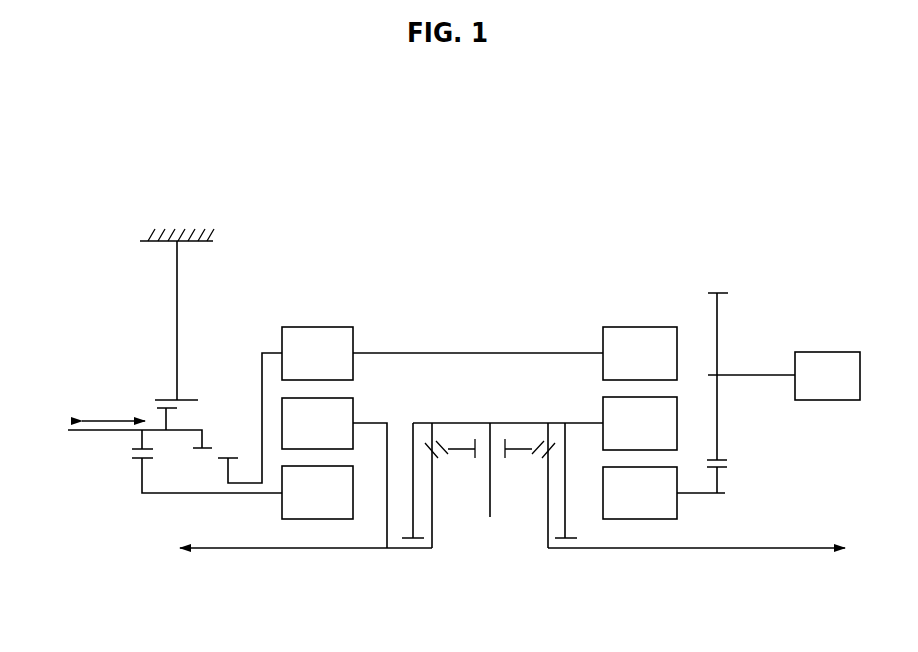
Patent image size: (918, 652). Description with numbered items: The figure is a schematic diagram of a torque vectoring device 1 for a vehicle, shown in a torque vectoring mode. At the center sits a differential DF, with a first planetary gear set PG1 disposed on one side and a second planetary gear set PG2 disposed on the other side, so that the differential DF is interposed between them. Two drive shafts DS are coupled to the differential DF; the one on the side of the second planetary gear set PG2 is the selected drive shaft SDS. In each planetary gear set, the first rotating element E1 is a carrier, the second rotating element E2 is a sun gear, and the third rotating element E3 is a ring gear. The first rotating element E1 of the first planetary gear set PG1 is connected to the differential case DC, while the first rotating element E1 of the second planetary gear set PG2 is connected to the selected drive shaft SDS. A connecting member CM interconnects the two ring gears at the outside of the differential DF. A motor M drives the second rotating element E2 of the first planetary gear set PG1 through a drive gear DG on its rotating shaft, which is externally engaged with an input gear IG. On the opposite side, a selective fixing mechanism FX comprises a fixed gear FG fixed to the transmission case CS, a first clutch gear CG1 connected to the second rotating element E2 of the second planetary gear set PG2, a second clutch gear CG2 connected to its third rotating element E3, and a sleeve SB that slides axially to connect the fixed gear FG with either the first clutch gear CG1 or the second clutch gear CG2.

The torque vectoring device 1 is at (690, 262).
The transmission case CS is at (185, 237).
The fixed gear FG is at (162, 398).
The sleeve SB is at (165, 415).
The selective fixing mechanism FX is at (120, 450).
The first clutch gear CG1 is at (138, 460).
The second clutch gear CG2 is at (228, 455).
The second planetary gear set PG2 is at (305, 320).
The first planetary gear set PG1 is at (628, 320).
The third rotating element E3 is at (332, 327).
The first rotating element E1 is at (353, 406).
The second rotating element E2 is at (332, 519).
The connecting member CM is at (497, 353).
The differential case DC is at (455, 423).
The differential DF is at (537, 415).
The drive gear DG is at (723, 293).
The input gear IG is at (722, 471).
The motor M is at (784, 376).
The selected drive shaft SDS is at (252, 548).
The drive shaft DS is at (775, 548).